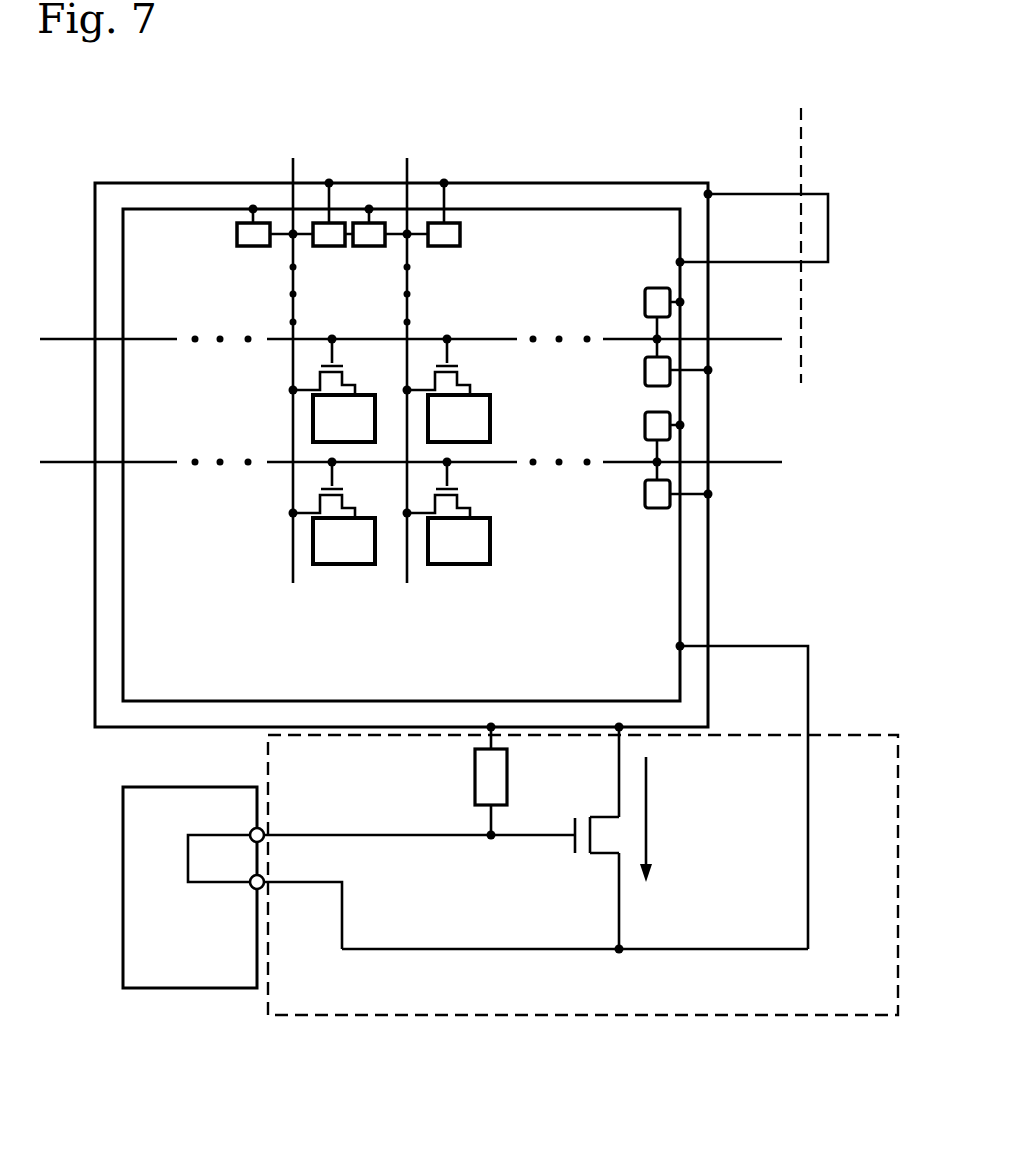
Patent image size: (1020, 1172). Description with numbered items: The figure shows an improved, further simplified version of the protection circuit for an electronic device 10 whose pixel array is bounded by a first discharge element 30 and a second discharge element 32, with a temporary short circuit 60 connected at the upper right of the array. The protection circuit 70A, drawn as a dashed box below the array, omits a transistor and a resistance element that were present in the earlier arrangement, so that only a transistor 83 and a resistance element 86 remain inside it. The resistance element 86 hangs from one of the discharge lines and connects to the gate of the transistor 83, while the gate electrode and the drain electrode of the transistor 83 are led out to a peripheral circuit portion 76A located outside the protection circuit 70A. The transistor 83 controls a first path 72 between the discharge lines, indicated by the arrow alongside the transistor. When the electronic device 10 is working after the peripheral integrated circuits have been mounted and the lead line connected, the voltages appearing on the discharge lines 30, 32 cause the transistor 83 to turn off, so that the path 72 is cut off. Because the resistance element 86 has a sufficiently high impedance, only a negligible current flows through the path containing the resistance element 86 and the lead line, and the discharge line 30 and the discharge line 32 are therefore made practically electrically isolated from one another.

The electronic device 10 is at (657, 148).
The first discharge element 30 is at (680, 538).
The second discharge element 32 is at (708, 577).
The temporary short circuit 60 is at (830, 225).
The protection circuit 70A is at (587, 1015).
The first path 72 is at (649, 843).
The peripheral circuit portion 76A is at (190, 988).
The transistor 83 is at (598, 859).
The resistance element 86 is at (507, 760).